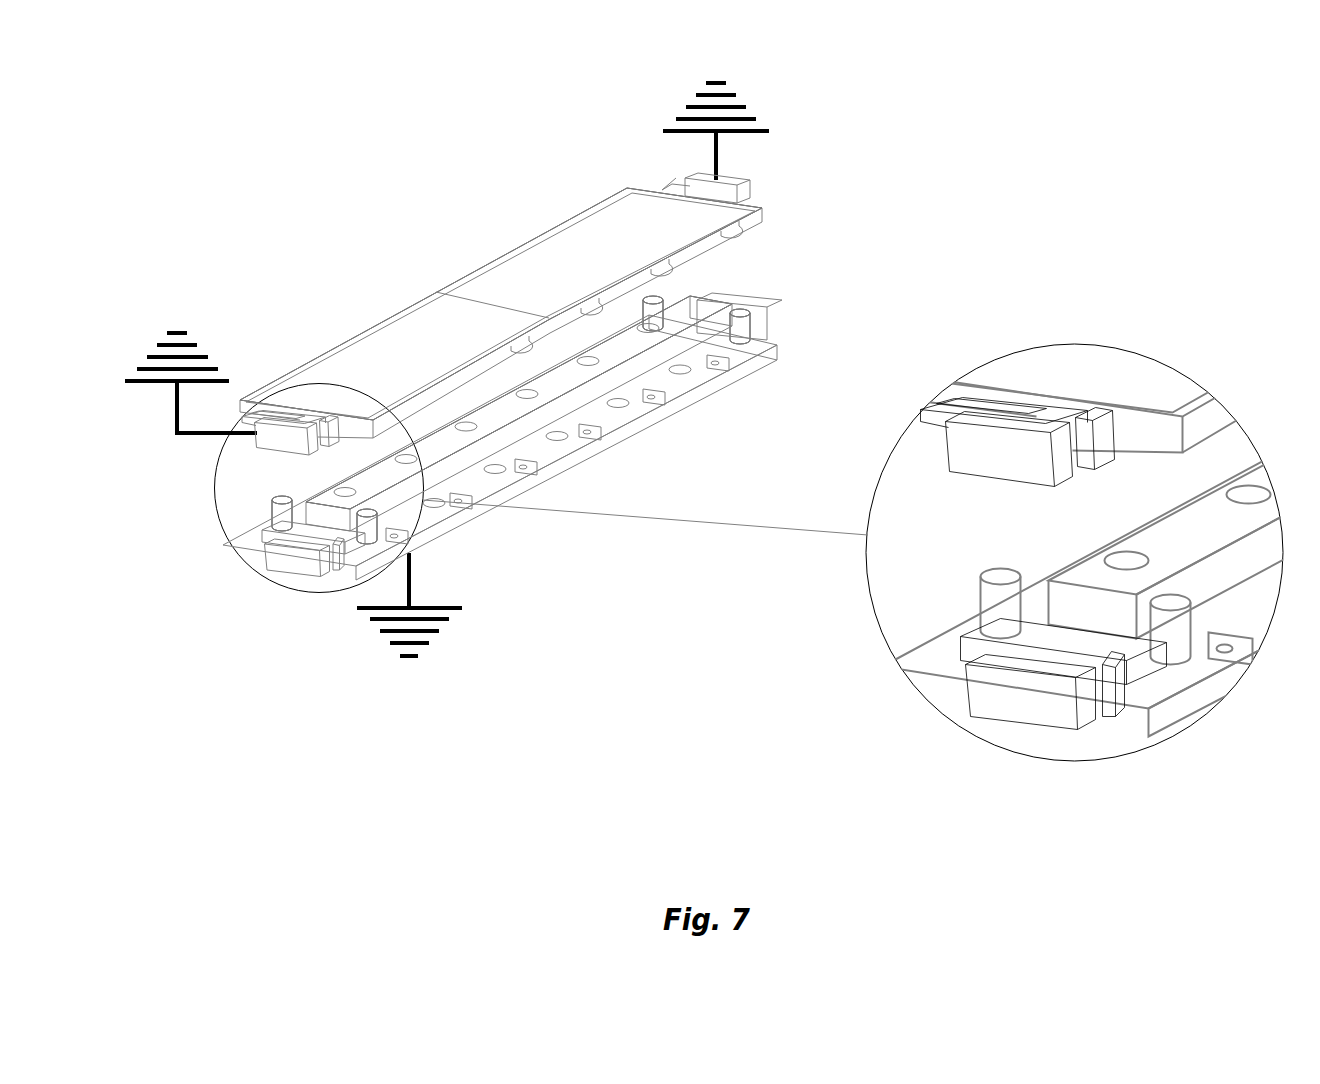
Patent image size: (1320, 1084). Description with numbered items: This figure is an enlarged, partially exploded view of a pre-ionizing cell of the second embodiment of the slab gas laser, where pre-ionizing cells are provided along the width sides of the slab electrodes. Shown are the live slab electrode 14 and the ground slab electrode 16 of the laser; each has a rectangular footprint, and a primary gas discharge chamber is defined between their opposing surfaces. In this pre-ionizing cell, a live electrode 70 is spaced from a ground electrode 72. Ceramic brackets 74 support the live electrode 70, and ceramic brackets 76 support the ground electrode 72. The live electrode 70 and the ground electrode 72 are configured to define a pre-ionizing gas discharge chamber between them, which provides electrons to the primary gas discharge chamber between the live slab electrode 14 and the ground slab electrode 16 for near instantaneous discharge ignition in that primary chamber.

The live slab electrode 14 is at (452, 333).
The ground slab electrode 16 is at (597, 452).
The live electrode 70 is at (1063, 657).
The ground electrode 72 is at (1013, 417).
The ceramic brackets 74 is at (990, 693).
The ceramic brackets 76 is at (1098, 442).